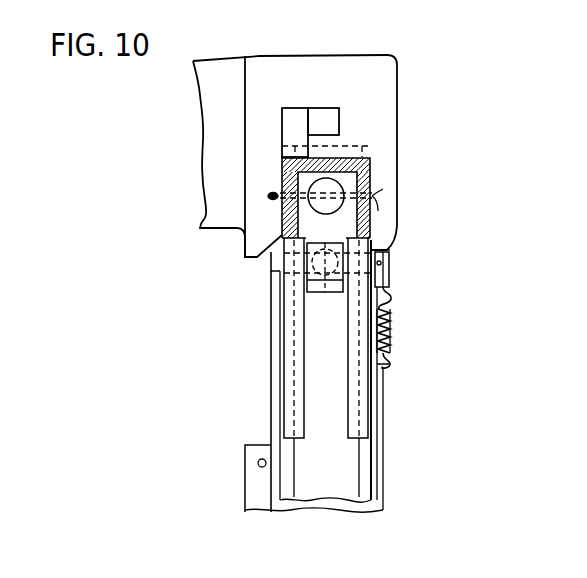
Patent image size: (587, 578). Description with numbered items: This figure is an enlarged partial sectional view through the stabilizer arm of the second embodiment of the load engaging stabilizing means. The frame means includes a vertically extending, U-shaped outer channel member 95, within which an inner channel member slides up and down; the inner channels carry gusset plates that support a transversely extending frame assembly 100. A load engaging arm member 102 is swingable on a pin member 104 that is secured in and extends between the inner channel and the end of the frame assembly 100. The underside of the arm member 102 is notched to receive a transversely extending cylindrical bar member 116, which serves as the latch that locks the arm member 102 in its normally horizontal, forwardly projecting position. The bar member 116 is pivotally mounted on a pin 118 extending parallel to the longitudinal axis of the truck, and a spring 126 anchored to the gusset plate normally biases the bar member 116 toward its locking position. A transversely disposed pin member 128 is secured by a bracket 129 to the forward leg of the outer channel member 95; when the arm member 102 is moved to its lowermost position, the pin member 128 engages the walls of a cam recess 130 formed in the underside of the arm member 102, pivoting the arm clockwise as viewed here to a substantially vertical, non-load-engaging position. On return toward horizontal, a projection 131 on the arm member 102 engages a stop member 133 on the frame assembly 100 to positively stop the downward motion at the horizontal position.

The outer channel member 95 is at (378, 503).
The frame assembly 100 is at (370, 165).
The arm member 102 is at (207, 91).
The pin member 104 is at (341, 191).
The cylindrical bar member 116 is at (338, 294).
The pin 118 is at (392, 262).
The spring 126 is at (392, 322).
The pin member 128 is at (258, 465).
The bracket 129 is at (255, 502).
The cam recess 130 is at (273, 253).
The projection 131 is at (330, 121).
The stop member 133 is at (297, 118).